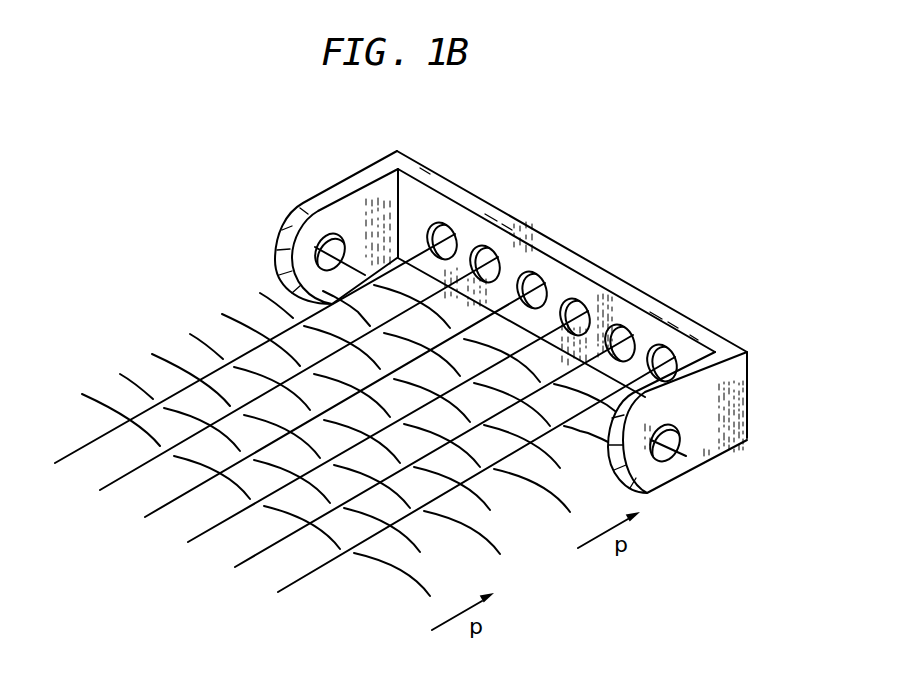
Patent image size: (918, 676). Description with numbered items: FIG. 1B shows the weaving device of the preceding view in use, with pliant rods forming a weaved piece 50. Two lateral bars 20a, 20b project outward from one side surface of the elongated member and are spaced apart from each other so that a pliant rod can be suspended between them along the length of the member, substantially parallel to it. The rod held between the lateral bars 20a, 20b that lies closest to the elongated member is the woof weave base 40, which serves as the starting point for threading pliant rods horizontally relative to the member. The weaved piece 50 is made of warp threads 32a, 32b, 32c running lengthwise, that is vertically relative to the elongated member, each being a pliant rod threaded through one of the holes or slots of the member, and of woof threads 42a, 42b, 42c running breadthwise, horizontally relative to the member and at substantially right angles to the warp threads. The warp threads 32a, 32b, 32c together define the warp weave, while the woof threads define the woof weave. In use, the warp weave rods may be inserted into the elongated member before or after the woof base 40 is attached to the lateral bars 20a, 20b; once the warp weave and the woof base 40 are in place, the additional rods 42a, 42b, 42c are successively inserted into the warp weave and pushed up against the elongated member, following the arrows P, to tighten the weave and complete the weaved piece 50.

The lateral bar 20a is at (284, 220).
The lateral bar 20b is at (692, 358).
The warp thread 32a is at (458, 258).
The warp thread 32b is at (503, 290).
The warp thread 32c is at (551, 334).
The woof weave base 40 is at (354, 248).
The woof thread 42a is at (160, 354).
The woof thread 42b is at (132, 379).
The woof thread 42c is at (93, 396).
The weaved piece 50 is at (378, 455).